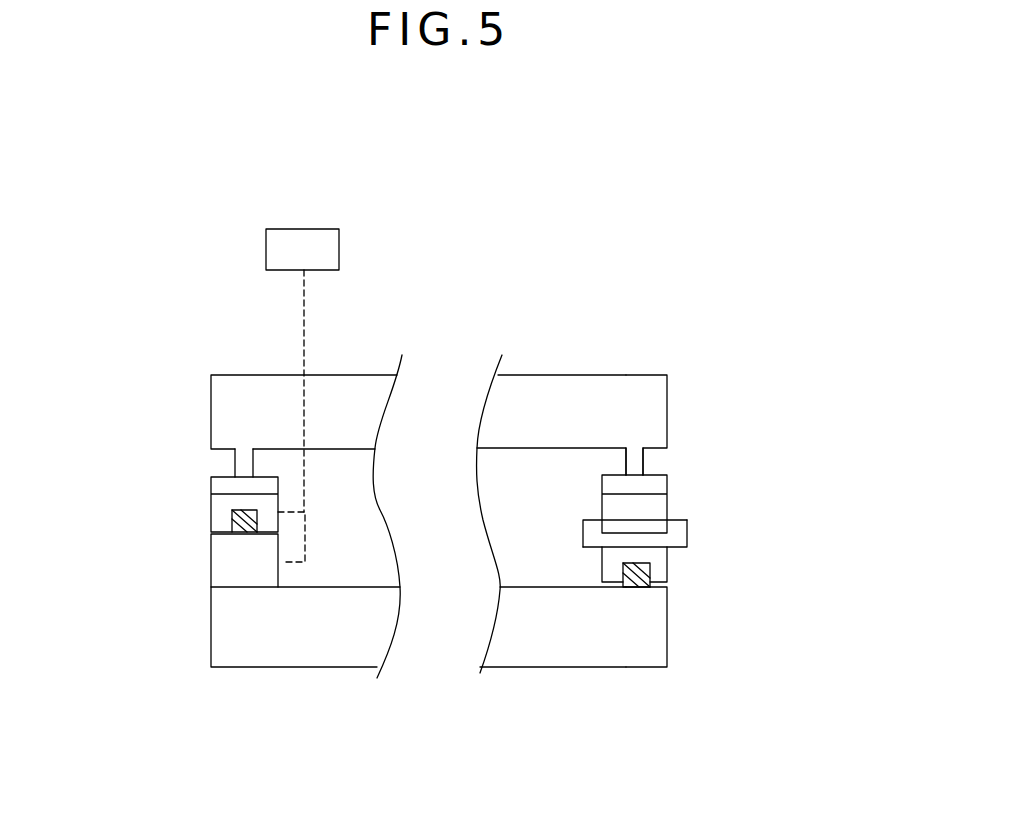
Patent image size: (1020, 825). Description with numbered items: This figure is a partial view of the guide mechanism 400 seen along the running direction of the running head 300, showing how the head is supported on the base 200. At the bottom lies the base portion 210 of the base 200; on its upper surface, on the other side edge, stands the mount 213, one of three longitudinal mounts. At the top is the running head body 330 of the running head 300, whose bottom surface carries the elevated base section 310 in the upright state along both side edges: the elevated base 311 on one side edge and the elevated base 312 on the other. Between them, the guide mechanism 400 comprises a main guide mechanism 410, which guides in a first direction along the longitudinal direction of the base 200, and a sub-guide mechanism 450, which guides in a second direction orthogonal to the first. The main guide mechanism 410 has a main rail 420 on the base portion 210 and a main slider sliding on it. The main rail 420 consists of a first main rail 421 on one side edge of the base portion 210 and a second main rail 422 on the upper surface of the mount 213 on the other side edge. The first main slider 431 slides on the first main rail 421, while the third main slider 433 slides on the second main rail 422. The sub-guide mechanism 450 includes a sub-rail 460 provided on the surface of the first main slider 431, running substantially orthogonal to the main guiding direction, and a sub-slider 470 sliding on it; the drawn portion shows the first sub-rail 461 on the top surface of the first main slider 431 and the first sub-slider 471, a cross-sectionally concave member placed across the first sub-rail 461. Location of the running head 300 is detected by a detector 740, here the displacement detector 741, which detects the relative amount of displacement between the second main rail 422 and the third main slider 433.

The base 200 is at (568, 653).
The base portion 210 is at (645, 653).
The mount 213 is at (220, 545).
The running head 300 is at (558, 383).
The elevated base section 310 is at (443, 445).
The elevated base 311 is at (638, 463).
The elevated base 312 is at (243, 463).
The running head body 330 is at (635, 383).
The guide mechanism 400 is at (173, 519).
The main guide mechanism 410 is at (320, 518).
The main rail 420 is at (447, 564).
The first main rail 421 is at (651, 577).
The second main rail 422 is at (243, 530).
The first main slider 431 is at (612, 567).
The third main slider 433 is at (222, 512).
The sub-guide mechanism 450 is at (712, 525).
The sub-rail 460 is at (715, 546).
The first sub-rail 461 is at (681, 537).
The sub-slider 470 is at (717, 492).
The first sub-slider 471 is at (662, 510).
The detector 740 is at (327, 345).
The displacement detector 741 is at (312, 229).